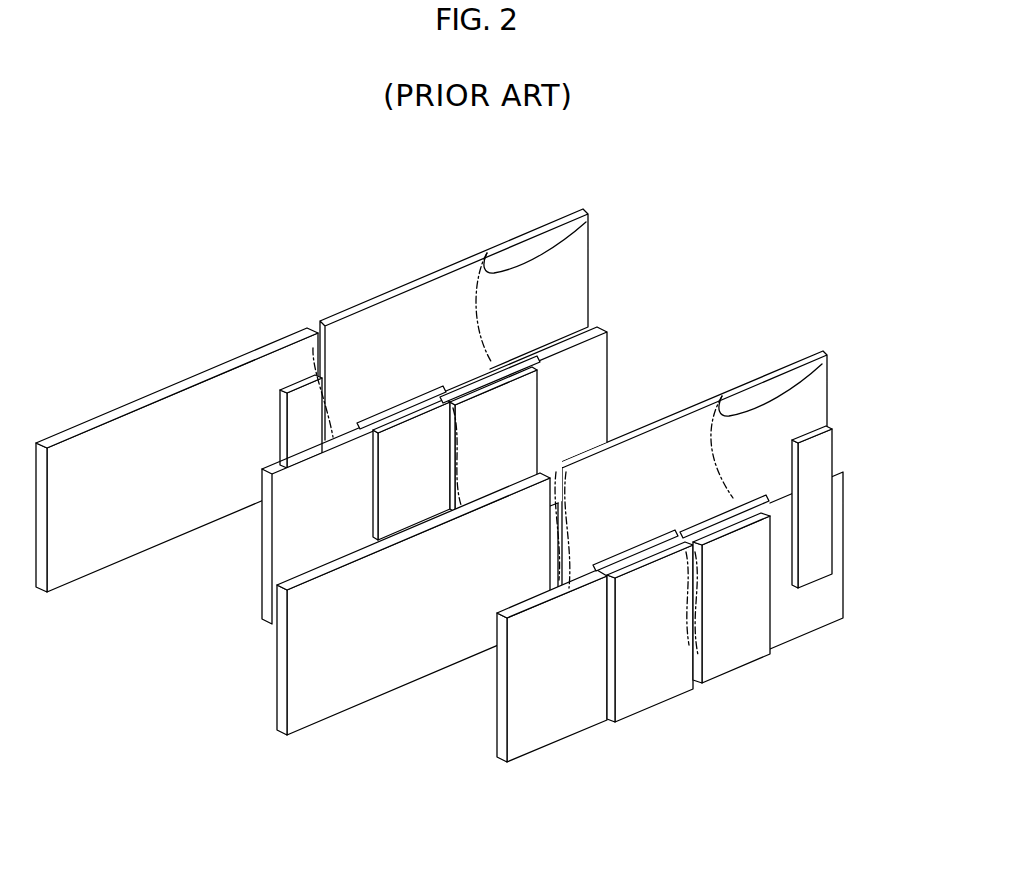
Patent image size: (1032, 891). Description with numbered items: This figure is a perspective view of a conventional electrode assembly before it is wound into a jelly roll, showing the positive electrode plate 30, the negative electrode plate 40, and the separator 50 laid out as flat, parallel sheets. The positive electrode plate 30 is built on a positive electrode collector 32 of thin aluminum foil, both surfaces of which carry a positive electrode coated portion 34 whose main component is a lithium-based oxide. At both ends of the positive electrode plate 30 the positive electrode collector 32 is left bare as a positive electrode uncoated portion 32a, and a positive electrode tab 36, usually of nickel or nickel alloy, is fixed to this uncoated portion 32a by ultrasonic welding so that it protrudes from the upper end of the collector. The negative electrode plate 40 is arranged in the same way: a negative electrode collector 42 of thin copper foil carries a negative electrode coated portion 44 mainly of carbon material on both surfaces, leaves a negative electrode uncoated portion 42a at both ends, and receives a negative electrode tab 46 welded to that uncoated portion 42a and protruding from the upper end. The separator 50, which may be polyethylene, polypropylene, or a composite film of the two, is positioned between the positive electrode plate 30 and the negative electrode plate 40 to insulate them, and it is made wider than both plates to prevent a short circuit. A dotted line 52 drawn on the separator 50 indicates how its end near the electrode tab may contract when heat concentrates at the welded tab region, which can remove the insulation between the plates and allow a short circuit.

The positive electrode plate 30 is at (345, 494).
The positive electrode collector 32 is at (410, 449).
The positive electrode uncoated portion 32a is at (259, 584).
The positive electrode coated portion 34 is at (510, 365).
The positive electrode tab 36 is at (327, 372).
The negative electrode plate 40 is at (710, 568).
The negative electrode collector 42 is at (741, 575).
The negative electrode uncoated portion 42a is at (845, 563).
The negative electrode coated portion 44 is at (736, 500).
The negative electrode tab 46 is at (830, 428).
The separator 50 is at (574, 211).
The dotted line 52 is at (590, 228).